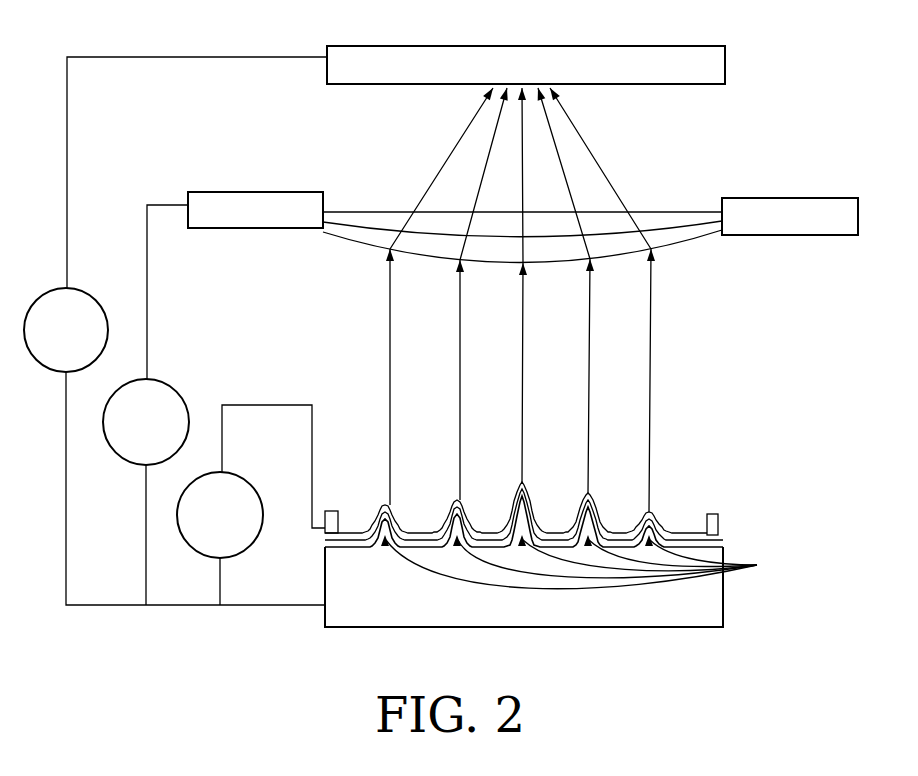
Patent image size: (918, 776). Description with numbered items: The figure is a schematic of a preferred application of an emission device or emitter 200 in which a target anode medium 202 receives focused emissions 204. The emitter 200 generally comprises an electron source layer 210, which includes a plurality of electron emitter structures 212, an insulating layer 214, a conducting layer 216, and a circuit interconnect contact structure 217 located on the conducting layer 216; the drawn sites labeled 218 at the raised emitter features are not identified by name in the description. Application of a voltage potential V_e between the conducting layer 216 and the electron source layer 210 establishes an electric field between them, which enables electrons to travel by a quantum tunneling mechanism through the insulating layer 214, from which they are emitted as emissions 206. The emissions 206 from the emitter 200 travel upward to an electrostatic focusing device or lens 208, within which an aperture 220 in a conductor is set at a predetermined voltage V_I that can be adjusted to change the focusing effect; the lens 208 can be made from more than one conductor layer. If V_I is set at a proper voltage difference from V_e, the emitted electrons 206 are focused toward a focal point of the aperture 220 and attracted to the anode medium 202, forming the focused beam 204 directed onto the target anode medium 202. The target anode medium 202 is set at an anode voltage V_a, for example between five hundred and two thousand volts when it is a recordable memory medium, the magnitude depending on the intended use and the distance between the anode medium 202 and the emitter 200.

The emitter 200 is at (311, 353).
The target anode medium 202 is at (725, 77).
The focused beam 204 is at (633, 183).
The emissions 206 is at (652, 345).
The electrostatic focusing lens 208 is at (237, 192).
The electron source layer 210 is at (723, 618).
The electron emitter structures 212 is at (589, 562).
The insulating layer 214 is at (697, 540).
The conducting layer 216 is at (357, 532).
The circuit interconnect contact structure 217 is at (328, 511).
The emitter tips 218 is at (397, 490).
The aperture 220 is at (688, 250).